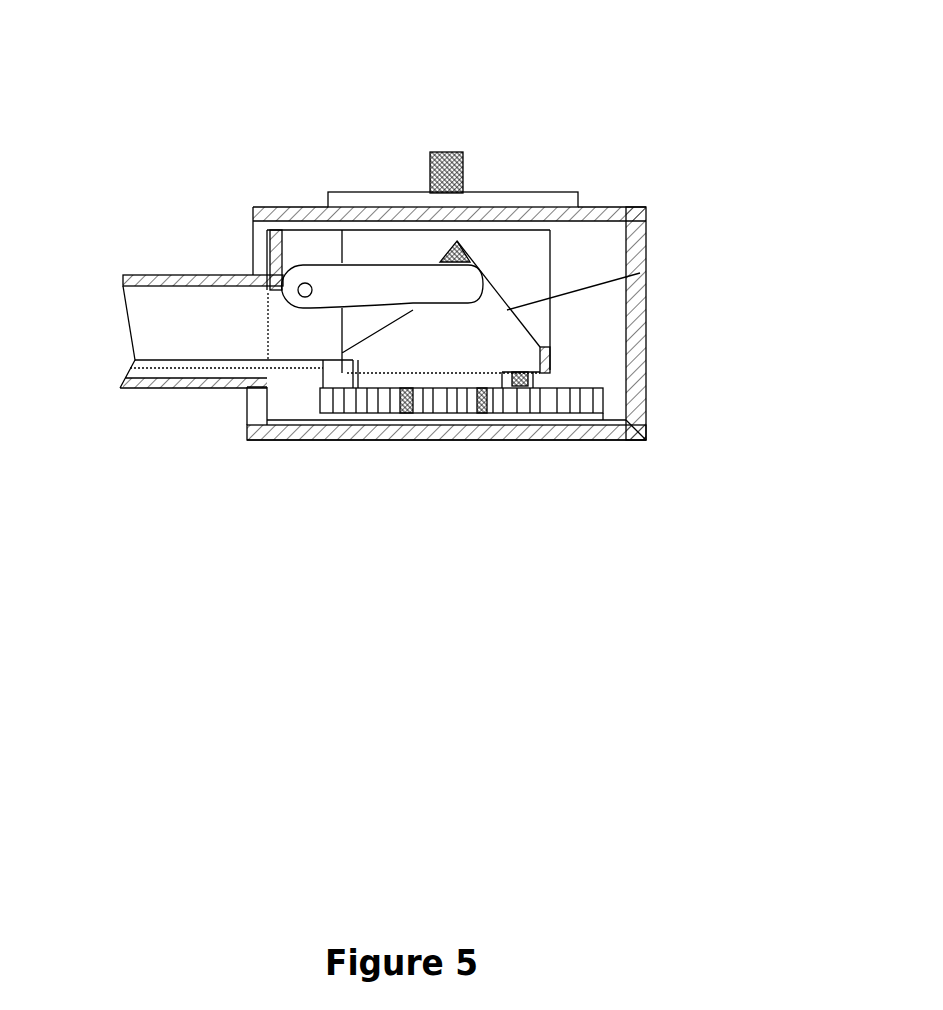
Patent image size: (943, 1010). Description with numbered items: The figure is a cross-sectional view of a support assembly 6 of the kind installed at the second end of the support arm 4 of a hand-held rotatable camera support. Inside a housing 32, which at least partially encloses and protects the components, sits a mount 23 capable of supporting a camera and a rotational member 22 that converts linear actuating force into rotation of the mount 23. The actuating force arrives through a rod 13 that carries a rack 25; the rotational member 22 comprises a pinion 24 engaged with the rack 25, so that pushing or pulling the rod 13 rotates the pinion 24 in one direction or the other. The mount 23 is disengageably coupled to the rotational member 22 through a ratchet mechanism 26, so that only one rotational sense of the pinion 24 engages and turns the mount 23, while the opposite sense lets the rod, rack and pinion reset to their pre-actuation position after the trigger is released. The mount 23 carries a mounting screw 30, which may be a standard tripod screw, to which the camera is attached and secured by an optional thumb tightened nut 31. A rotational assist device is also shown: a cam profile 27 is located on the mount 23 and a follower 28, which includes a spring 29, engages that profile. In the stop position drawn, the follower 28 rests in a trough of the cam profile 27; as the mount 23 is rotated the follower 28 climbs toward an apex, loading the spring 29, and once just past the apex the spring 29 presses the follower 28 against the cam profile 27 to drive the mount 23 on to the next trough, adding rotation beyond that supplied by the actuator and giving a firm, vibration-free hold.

The support assembly 6 is at (446, 220).
The thumb tightened nut 31 is at (387, 195).
The mounting screw 30 is at (463, 161).
The spring 29 is at (253, 275).
The follower 28 is at (352, 297).
The mount 23 is at (475, 301).
The cam profile 27 is at (640, 273).
The rotational member 22 is at (555, 369).
The pinion 24 is at (460, 430).
The housing 32 is at (647, 405).
The rack 25 is at (380, 400).
The ratchet mechanism 26 is at (520, 378).
The support arm 4 is at (147, 387).
The rod 13 is at (193, 377).